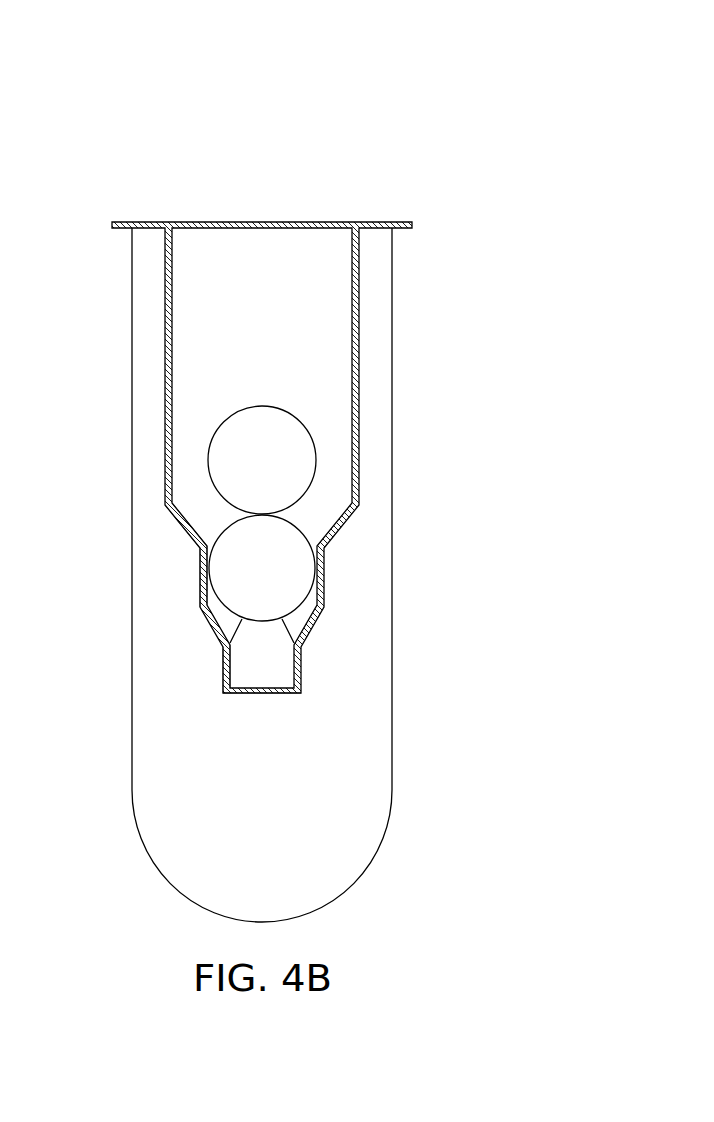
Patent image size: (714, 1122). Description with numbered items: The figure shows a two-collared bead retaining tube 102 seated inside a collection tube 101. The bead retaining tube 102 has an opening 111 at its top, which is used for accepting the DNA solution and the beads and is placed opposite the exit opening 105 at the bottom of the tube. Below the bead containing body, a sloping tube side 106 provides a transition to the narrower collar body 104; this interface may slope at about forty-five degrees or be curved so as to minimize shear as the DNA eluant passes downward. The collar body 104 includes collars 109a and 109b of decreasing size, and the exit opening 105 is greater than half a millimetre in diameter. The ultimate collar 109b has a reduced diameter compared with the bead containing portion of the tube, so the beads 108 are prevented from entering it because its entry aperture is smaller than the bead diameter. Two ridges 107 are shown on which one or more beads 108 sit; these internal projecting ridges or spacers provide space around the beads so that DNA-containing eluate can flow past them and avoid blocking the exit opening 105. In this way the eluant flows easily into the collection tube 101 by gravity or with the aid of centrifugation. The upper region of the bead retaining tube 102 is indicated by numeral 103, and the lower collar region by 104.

The collection tube 101 is at (132, 312).
The bead retaining tube 102 is at (495, 223).
The upper chamber portion 103 is at (425, 223).
The collar body 104 is at (425, 512).
The exit opening 105 is at (255, 694).
The sloping tube side 106 is at (186, 532).
The ridge 107 is at (237, 625).
The bead 108 is at (262, 513).
The collar 109a is at (202, 582).
The ultimate collar 109b is at (223, 672).
The opening 111 is at (292, 144).